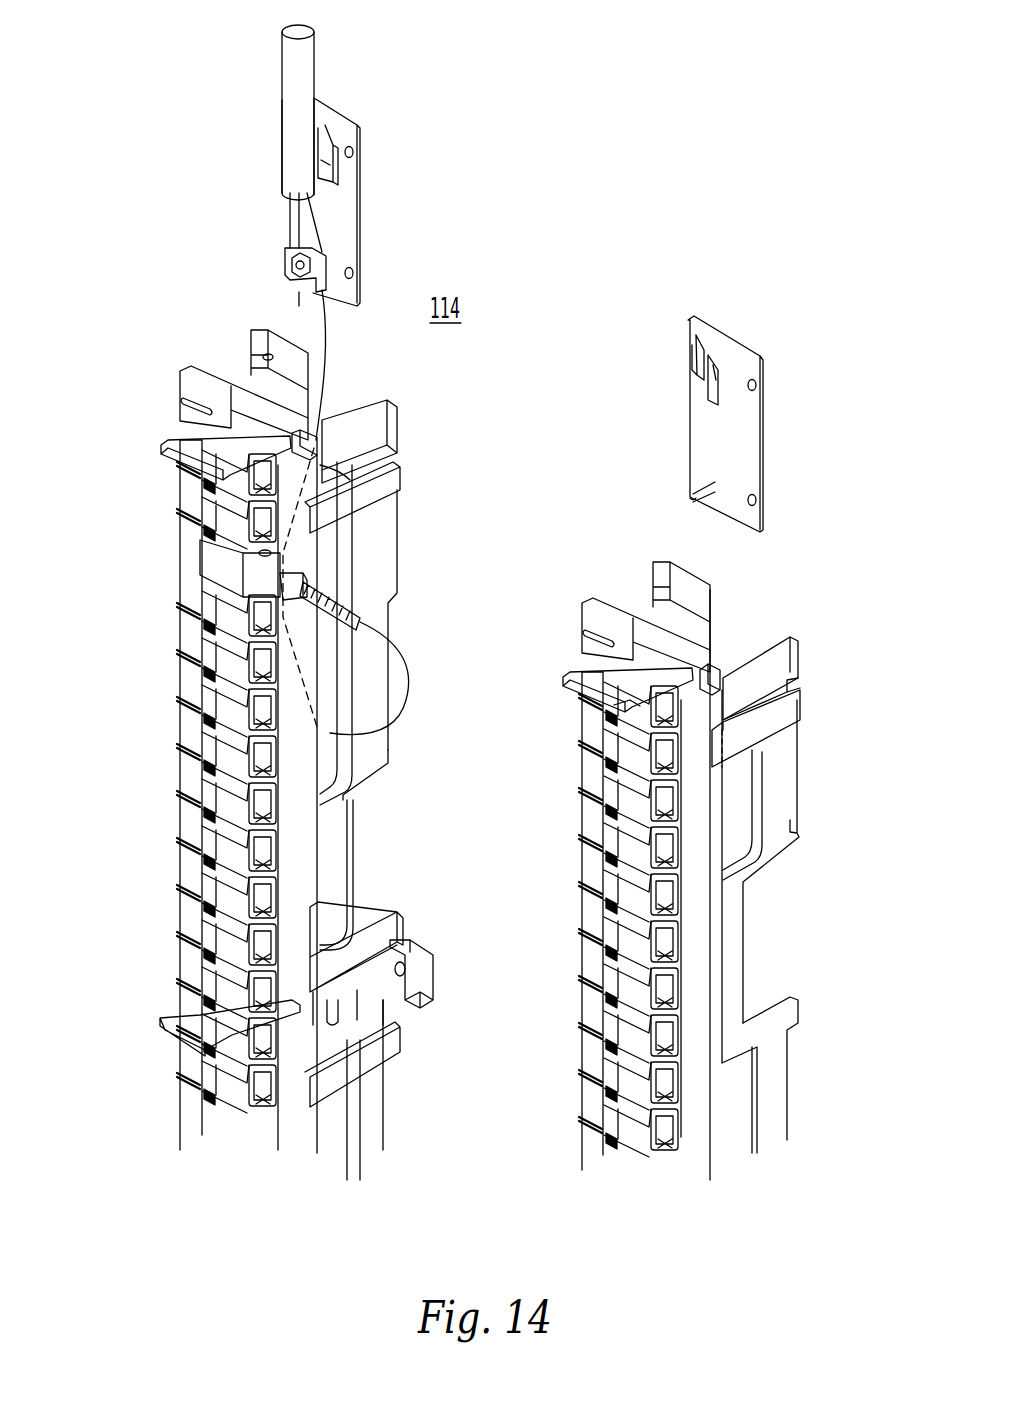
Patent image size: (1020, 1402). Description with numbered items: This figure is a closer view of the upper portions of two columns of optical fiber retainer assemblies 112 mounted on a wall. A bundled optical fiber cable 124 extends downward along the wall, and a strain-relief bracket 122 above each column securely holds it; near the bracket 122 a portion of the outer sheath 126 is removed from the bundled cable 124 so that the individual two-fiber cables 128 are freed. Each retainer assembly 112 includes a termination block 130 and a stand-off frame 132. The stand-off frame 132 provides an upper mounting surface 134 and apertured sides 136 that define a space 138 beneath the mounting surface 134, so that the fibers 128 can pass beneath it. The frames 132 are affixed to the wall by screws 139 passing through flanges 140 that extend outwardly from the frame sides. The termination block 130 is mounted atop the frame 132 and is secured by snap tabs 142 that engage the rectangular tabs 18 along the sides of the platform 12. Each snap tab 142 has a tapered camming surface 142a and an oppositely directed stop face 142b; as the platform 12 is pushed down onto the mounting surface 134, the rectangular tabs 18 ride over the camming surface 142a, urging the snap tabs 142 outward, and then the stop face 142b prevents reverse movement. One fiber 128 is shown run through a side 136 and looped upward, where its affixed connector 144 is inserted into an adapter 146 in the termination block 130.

The lower platform 12 is at (300, 860).
The rectangular tabs 18 is at (322, 455).
The optical fiber retainer assemblies 112 is at (140, 801).
The strain-relief bracket 122 is at (345, 216).
The bundled optical fiber cable 124 is at (320, 62).
The outer sheath 126 is at (295, 118).
The two-fiber cables 128 is at (289, 238).
The termination block 130 is at (172, 577).
The stand-off frame 132 is at (398, 432).
The upper mounting surface 134 is at (352, 448).
The apertured sides 136 is at (385, 780).
The space 138 is at (330, 415).
The screws 139 is at (256, 358).
The flanges 140 is at (258, 330).
The snap tabs 142 is at (380, 495).
The tapered camming surface 142a is at (625, 705).
The stop face 142b is at (800, 684).
The connector 144 is at (297, 583).
The adapter 146 is at (230, 556).